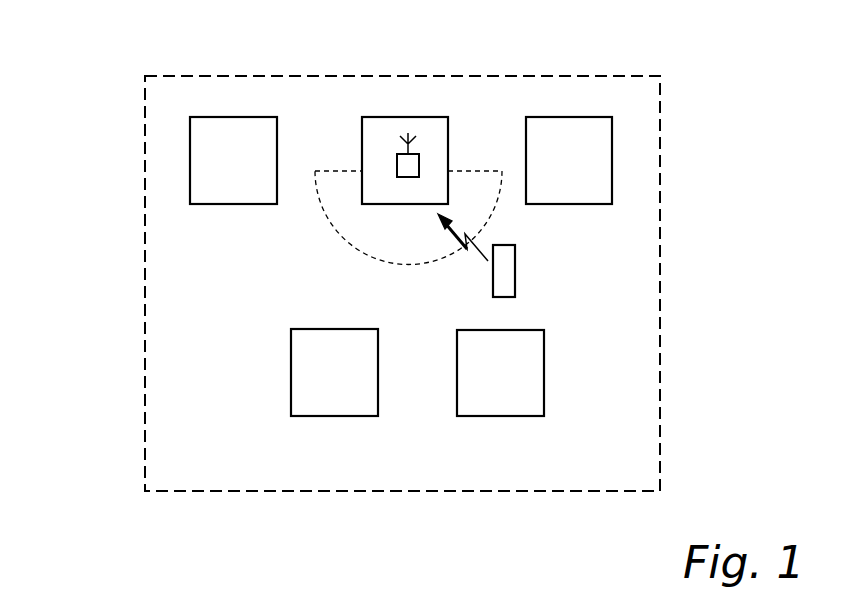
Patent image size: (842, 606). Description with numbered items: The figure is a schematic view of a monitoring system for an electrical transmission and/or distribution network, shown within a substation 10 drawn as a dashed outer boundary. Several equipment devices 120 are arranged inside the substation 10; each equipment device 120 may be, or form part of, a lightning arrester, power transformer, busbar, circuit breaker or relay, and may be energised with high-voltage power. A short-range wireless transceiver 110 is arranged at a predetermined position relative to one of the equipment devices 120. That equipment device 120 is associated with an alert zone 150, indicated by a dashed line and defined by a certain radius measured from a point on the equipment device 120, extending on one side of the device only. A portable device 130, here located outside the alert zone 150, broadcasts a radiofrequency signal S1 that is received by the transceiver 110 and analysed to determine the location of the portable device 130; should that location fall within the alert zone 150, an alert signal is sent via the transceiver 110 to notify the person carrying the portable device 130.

The substation 10 is at (660, 375).
The short-range wireless transceiver 110 is at (397, 165).
The equipment device 120 is at (190, 162).
The portable device 130 is at (515, 263).
The alert zone 150 is at (327, 217).
The signal S1 is at (467, 233).